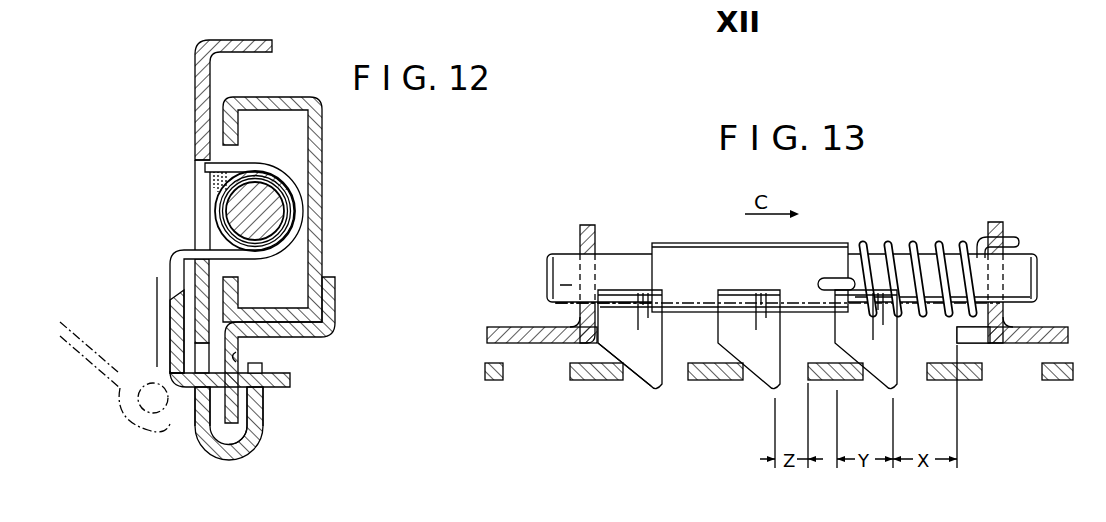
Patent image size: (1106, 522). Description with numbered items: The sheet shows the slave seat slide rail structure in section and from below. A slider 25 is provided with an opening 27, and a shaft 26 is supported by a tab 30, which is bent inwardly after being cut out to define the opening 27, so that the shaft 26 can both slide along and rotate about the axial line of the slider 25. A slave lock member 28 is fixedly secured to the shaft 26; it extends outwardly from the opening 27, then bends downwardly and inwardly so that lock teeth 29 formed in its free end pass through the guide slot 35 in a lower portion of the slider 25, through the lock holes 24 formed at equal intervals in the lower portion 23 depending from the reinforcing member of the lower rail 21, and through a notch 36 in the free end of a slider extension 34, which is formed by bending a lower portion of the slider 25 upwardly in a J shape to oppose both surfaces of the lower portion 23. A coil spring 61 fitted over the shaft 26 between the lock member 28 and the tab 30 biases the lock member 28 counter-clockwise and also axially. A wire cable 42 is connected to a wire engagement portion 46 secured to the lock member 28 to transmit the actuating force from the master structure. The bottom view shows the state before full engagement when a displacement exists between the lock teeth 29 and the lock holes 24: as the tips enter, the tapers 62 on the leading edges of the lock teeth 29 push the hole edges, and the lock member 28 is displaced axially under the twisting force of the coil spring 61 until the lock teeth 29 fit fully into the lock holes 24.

In FIG. 12, the lower rail 21 is at (322, 98).
In FIG. 12, the lower portion 23 is at (244, 450).
In FIG. 13, the lower portion 23 is at (573, 381).
In FIG. 12, the lock holes 24 is at (240, 358).
In FIG. 13, the lock holes 24 is at (693, 382).
In FIG. 12, the slider 25 is at (232, 40).
In FIG. 13, the slider 25 is at (1045, 331).
In FIG. 12, the shaft 26 is at (273, 222).
In FIG. 13, the shaft 26 is at (1040, 268).
In FIG. 12, the opening 27 is at (205, 163).
In FIG. 12, the slave lock member 28 is at (173, 250).
In FIG. 13, the slave lock member 28 is at (682, 244).
In FIG. 12, the lock teeth 29 is at (291, 380).
In FIG. 13, the lock teeth 29 is at (640, 380).
In FIG. 12, the tab 30 is at (270, 166).
In FIG. 13, the tab 30 is at (586, 225).
In FIG. 12, the slider extension 34 is at (226, 461).
In FIG. 12, the guide slot 35 is at (196, 406).
In FIG. 13, the guide slot 35 is at (958, 336).
In FIG. 12, the notch 36 is at (265, 404).
In FIG. 12, the wire cable 42 is at (102, 362).
In FIG. 12, the wire engagement portion 46 is at (130, 426).
In FIG. 12, the coil spring 61 is at (290, 198).
In FIG. 13, the coil spring 61 is at (890, 250).
In FIG. 13, the tapers 62 is at (652, 392).